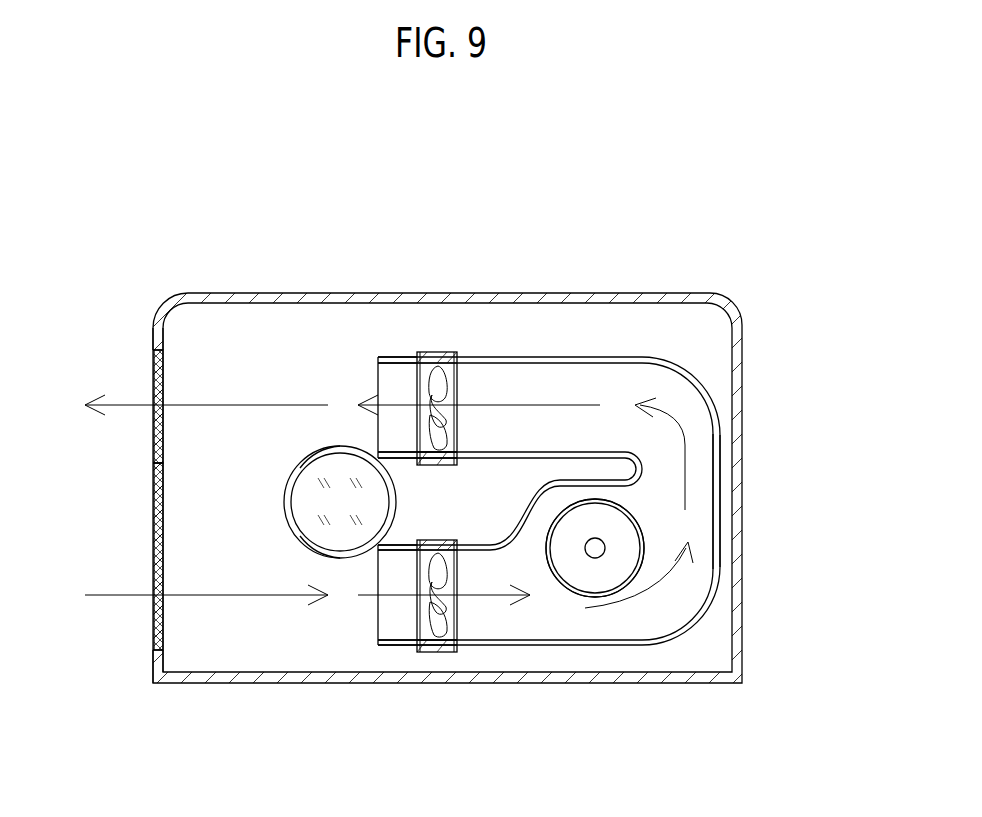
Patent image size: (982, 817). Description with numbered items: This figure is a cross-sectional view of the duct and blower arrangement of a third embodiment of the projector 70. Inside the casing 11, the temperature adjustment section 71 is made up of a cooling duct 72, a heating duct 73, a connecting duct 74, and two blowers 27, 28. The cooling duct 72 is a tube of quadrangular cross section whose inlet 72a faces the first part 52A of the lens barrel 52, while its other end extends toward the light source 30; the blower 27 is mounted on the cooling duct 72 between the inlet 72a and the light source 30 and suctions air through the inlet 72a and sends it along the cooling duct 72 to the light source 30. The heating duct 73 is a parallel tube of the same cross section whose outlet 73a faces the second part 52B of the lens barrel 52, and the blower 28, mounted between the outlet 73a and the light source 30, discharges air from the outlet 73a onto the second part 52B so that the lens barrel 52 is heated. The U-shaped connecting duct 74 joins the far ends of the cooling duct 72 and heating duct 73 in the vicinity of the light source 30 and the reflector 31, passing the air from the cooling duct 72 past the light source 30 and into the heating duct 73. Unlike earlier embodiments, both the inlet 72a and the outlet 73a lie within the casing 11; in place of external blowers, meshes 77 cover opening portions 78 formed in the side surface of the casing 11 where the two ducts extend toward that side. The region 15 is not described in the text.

The projector 70 is at (421, 417).
The casing 11 is at (598, 300).
The temperature adjustment section 71 is at (674, 340).
The connecting duct 74 is at (702, 462).
The heating duct 73 is at (382, 346).
The outlet 73a is at (378, 362).
The blower 28 is at (435, 368).
The cooling duct 72 is at (382, 647).
The inlet 72a is at (378, 642).
The blower 27 is at (437, 632).
The light source 30 is at (590, 556).
The reflector 31 is at (633, 507).
The lens barrel 52 is at (293, 504).
The first part 52A is at (325, 557).
The second part 52B is at (325, 448).
The air passage 15 is at (392, 508).
The mesh 77 is at (157, 465).
The opening portion 78 is at (157, 380).